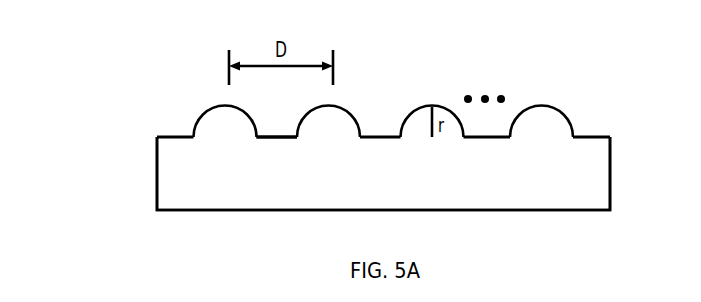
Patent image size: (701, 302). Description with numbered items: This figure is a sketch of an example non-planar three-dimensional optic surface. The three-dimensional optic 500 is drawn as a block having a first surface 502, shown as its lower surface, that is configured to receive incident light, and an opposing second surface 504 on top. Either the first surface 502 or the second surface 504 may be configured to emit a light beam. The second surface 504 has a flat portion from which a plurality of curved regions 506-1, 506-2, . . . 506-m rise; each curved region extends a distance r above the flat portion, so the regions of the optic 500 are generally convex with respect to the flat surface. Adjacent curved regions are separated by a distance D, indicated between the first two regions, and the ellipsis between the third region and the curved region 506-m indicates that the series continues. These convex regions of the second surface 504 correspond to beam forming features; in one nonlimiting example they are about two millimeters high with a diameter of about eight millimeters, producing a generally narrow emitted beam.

The 3-D optic 500 is at (108, 52).
The first surface 502 is at (253, 216).
The second surface 504 is at (271, 125).
The curved region 506-1 is at (217, 118).
The curved region 506-2 is at (328, 120).
The curved region 506-m is at (540, 123).